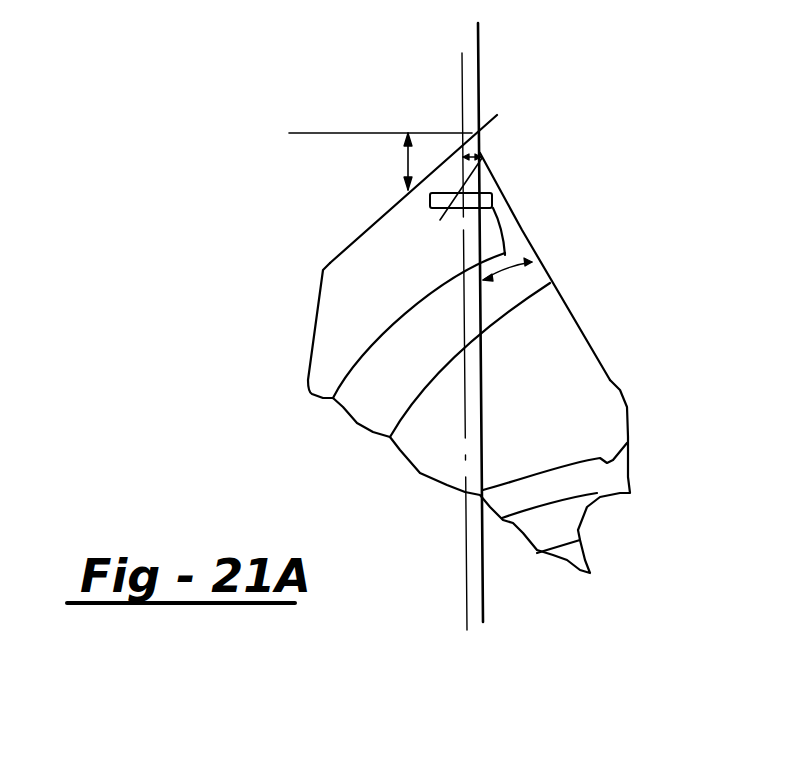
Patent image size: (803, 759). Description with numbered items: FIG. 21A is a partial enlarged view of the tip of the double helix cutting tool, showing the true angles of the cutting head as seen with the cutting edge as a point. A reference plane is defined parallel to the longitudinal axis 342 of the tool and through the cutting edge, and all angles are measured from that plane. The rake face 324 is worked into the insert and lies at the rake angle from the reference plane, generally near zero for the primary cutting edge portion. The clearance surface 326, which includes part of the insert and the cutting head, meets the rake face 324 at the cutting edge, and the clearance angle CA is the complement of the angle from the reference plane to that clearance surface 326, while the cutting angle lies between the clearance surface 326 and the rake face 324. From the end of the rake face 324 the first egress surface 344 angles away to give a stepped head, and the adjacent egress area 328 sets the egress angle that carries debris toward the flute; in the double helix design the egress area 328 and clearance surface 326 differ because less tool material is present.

The longitudinal axis 342 is at (461, 75).
The rake face 324 is at (483, 151).
The first egress surface 344 is at (490, 193).
The clearance surface 326 is at (388, 211).
The egress area 328 is at (550, 283).
The clearance angle CA is at (403, 165).